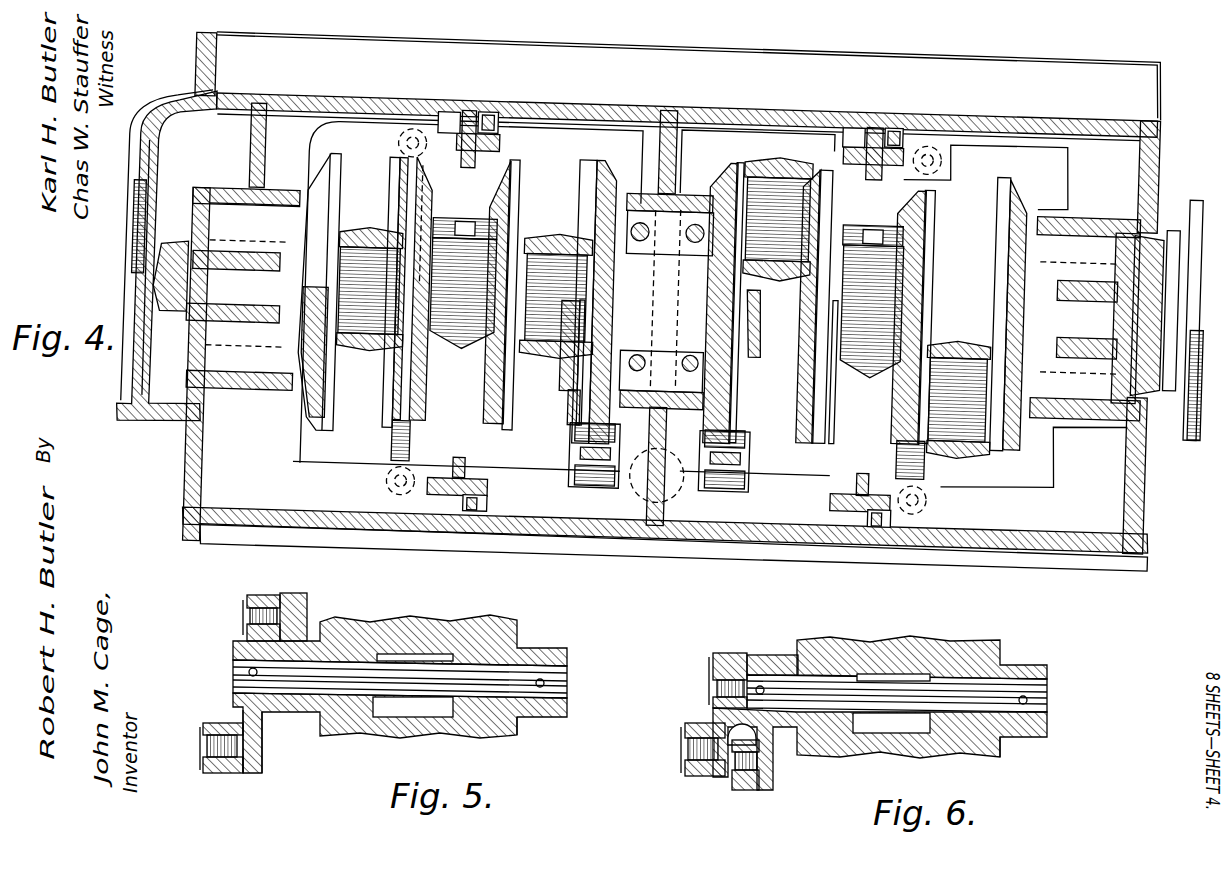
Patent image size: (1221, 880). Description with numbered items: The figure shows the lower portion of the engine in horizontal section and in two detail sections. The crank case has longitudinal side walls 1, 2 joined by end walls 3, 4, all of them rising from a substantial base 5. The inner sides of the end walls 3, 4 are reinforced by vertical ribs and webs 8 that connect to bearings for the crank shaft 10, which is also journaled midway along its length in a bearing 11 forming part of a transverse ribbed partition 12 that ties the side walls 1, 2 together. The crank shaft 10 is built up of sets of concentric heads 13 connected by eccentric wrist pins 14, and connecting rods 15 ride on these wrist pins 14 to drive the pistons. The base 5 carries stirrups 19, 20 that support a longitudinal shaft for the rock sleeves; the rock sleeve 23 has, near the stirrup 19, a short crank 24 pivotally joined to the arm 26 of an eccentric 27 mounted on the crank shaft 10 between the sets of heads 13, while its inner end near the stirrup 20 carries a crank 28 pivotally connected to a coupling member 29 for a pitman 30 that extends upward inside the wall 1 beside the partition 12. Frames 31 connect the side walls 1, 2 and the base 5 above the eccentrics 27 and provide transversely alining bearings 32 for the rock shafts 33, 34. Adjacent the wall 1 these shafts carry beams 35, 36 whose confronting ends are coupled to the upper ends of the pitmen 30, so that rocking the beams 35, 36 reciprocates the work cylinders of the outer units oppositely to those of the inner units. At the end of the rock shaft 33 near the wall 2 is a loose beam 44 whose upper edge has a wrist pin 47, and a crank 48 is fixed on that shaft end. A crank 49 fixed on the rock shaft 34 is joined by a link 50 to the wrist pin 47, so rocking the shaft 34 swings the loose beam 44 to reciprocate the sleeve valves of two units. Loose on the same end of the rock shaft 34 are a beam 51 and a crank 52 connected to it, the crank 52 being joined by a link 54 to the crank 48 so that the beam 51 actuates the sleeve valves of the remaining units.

In FIG. 4, the longitudinal side wall 1 is at (626, 528).
In FIG. 4, the longitudinal side wall 2 is at (588, 89).
In FIG. 4, the end wall 3 is at (1141, 450).
In FIG. 4, the end wall 4 is at (196, 477).
In FIG. 4, the base 5 is at (412, 557).
In FIG. 4, the vertical ribs and webs 8 is at (271, 374).
In FIG. 4, the crank shaft 10 is at (172, 261).
In FIG. 4, the bearing 11 is at (668, 250).
In FIG. 4, the transverse partition 12 is at (684, 482).
In FIG. 4, the concentric heads 13 is at (409, 392).
In FIG. 4, the wrist pins 14 is at (663, 303).
In FIG. 4, the connecting rods 15 is at (386, 227).
In FIG. 4, the stirrup 19 is at (403, 435).
In FIG. 4, the stirrup 20 is at (637, 478).
In FIG. 4, the rock sleeve 23 is at (770, 341).
In FIG. 4, the short cranks 24 is at (441, 211).
In FIG. 4, the arms 26 is at (468, 220).
In FIG. 4, the eccentrics 27 is at (456, 262).
In FIG. 4, the cranks 28 is at (588, 366).
In FIG. 4, the coupling members 29 is at (585, 420).
In FIG. 4, the pitmen 30 is at (589, 442).
In FIG. 4, the frames 31 is at (478, 117).
In FIG. 5, the bearings 32 is at (515, 640).
In FIG. 6, the bearings 32 is at (995, 667).
In FIG. 5, the rock shaft 33 is at (405, 700).
In FIG. 6, the rock shaft 34 is at (887, 735).
In FIG. 5, the beam 35 is at (545, 718).
In FIG. 6, the beam 36 is at (1027, 737).
In FIG. 5, the loose beam 44 is at (292, 713).
In FIG. 5, the wrist pin 47 is at (312, 610).
In FIG. 5, the crank 48 is at (250, 775).
In FIG. 6, the crank 49 is at (772, 778).
In FIG. 5, the link 50 is at (265, 600).
In FIG. 6, the link 50 is at (745, 790).
In FIG. 6, the beam 51 is at (790, 653).
In FIG. 6, the crank 52 is at (712, 715).
In FIG. 5, the link 54 is at (220, 775).
In FIG. 6, the link 54 is at (697, 777).